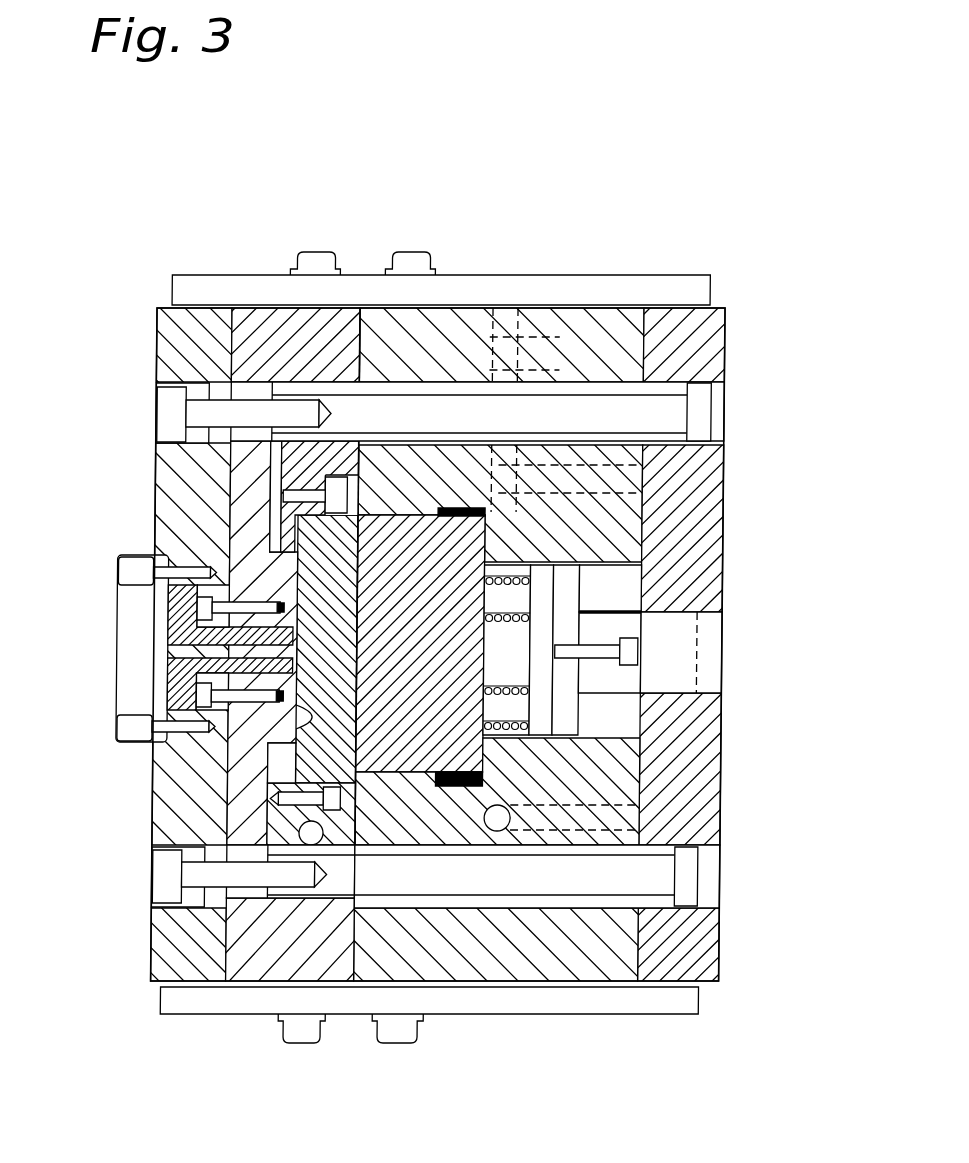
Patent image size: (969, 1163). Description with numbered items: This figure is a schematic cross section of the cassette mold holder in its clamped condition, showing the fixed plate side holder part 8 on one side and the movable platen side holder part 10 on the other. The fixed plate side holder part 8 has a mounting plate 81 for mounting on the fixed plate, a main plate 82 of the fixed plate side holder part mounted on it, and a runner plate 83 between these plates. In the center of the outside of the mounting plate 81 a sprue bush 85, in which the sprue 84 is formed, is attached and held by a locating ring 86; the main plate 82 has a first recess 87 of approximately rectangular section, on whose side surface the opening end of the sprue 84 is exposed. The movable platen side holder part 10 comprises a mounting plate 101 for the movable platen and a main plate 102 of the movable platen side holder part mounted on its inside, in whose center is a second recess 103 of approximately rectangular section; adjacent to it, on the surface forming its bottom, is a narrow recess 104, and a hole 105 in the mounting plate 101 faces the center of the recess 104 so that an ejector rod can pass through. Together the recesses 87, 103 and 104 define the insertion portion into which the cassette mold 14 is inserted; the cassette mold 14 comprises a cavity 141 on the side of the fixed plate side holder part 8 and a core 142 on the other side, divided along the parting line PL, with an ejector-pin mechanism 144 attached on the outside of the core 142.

The fixed plate side holder part 8 is at (349, 710).
The movable platen side holder part 10 is at (456, 635).
The cassette mold 14 is at (377, 473).
The cavity 141 is at (350, 476).
The core 142 is at (478, 494).
The ejector-pin mechanism 144 is at (547, 602).
The mounting plate 81 is at (165, 967).
The main plate of the fixed plate side holder part 82 is at (271, 966).
The runner plate 83 is at (238, 818).
The sprue 84 is at (168, 677).
The sprue bush 85 is at (168, 698).
The locating ring 86 is at (117, 588).
The first recess 87 is at (320, 715).
The mounting plate 101 is at (715, 985).
The main plate of the movable platen side holder part 102 is at (573, 960).
The second recess 103 is at (483, 774).
The recess 104 is at (618, 714).
The hole 105 is at (686, 612).
The parting line PL is at (359, 352).